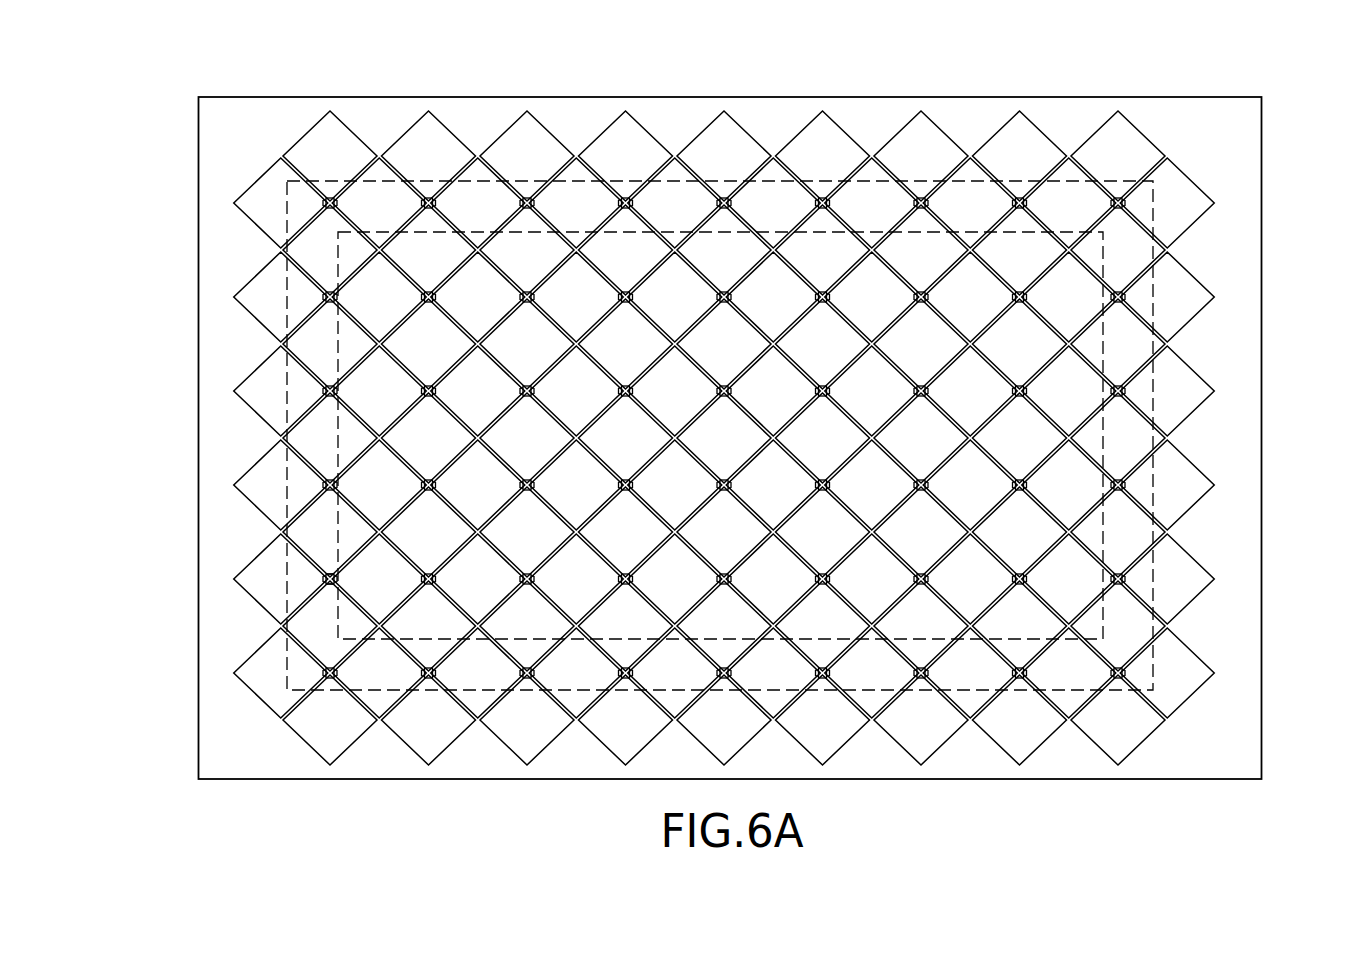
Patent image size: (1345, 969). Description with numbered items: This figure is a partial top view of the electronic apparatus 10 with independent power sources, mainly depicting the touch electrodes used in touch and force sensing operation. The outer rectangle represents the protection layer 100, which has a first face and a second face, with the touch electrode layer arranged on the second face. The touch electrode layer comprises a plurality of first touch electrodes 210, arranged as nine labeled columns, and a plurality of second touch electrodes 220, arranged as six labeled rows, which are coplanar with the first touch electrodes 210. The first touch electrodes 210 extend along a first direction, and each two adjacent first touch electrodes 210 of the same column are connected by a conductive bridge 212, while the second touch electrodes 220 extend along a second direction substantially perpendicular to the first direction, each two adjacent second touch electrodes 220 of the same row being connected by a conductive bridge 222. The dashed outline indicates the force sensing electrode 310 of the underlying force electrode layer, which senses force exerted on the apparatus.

The electronic apparatus 10 is at (718, 64).
The protection layer 100 is at (208, 422).
The first touch electrodes 210 is at (318, 738).
The conductive bridge 212 is at (321, 667).
The second touch electrodes 220 is at (266, 685).
The conductive bridge 222 is at (323, 579).
The force sensing electrode 310 is at (1147, 293).